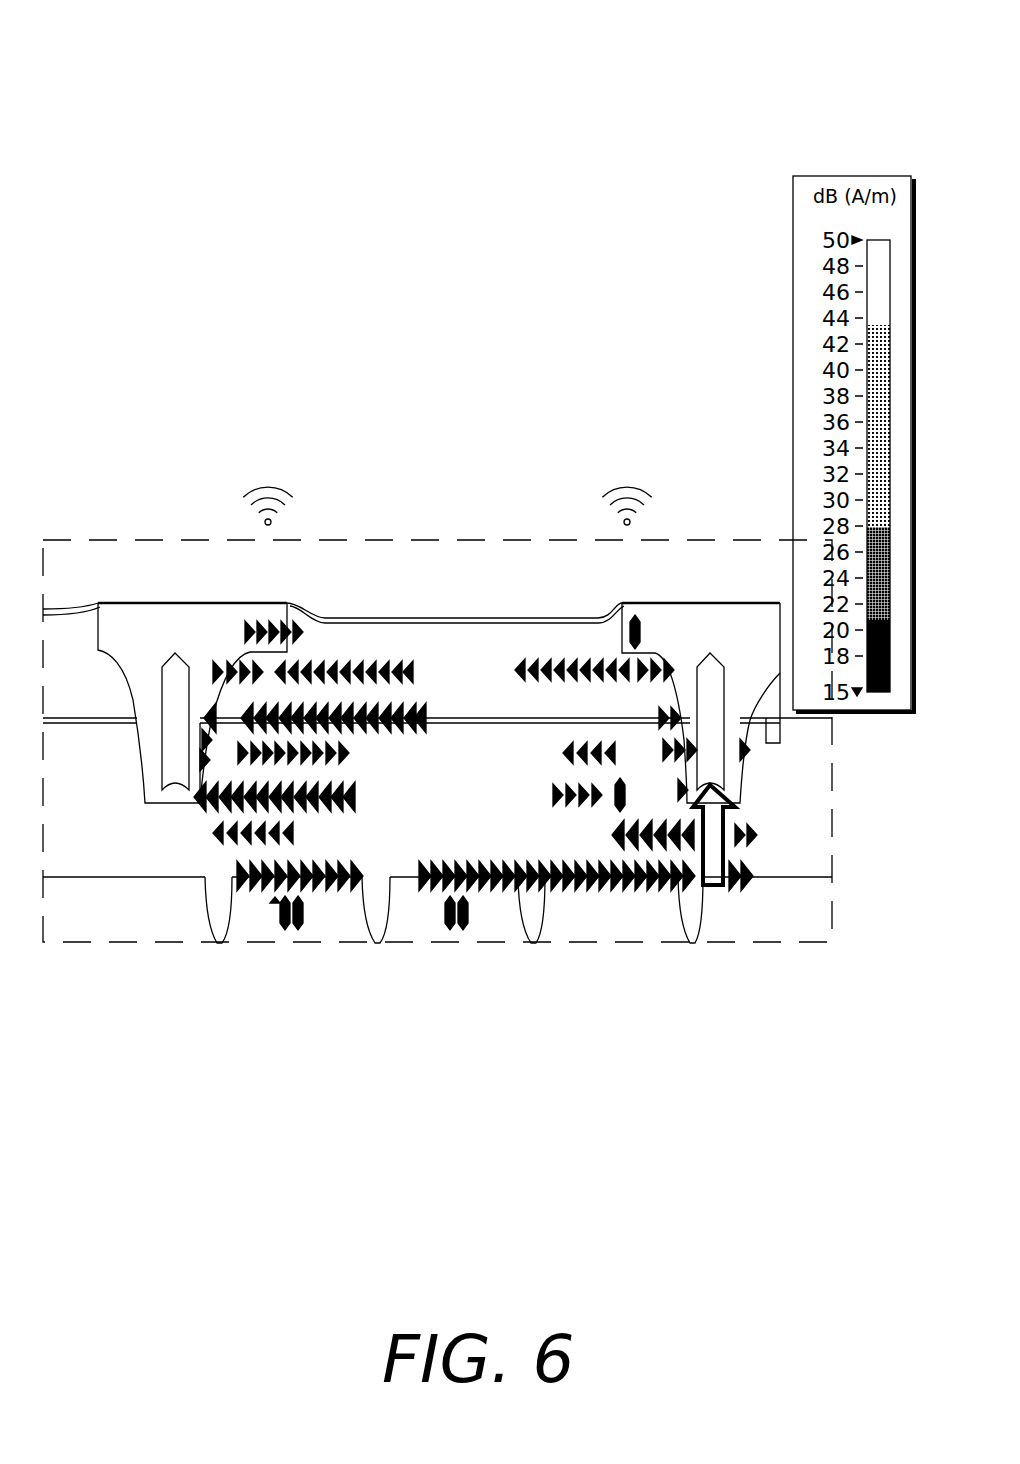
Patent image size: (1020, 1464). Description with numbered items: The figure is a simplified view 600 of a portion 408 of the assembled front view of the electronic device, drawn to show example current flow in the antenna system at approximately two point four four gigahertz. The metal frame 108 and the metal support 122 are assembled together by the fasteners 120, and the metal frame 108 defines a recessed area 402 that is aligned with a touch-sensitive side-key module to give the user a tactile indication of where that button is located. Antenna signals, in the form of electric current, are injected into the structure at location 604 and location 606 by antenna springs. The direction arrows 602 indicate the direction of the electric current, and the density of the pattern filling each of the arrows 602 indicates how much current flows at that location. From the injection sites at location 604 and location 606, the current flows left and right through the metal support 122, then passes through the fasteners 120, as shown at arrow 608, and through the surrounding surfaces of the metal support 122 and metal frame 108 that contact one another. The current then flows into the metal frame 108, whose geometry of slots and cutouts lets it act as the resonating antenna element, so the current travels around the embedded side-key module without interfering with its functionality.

The simplified view 600 is at (116, 46).
The portion 408 is at (107, 540).
The metal frame 108 is at (232, 602).
The recessed area 402 is at (436, 604).
The fasteners 120 is at (168, 667).
The metal support 122 is at (177, 878).
The location 604 is at (288, 952).
The location 606 is at (453, 952).
The direction arrows 602 is at (605, 890).
The arrow 608 is at (722, 825).